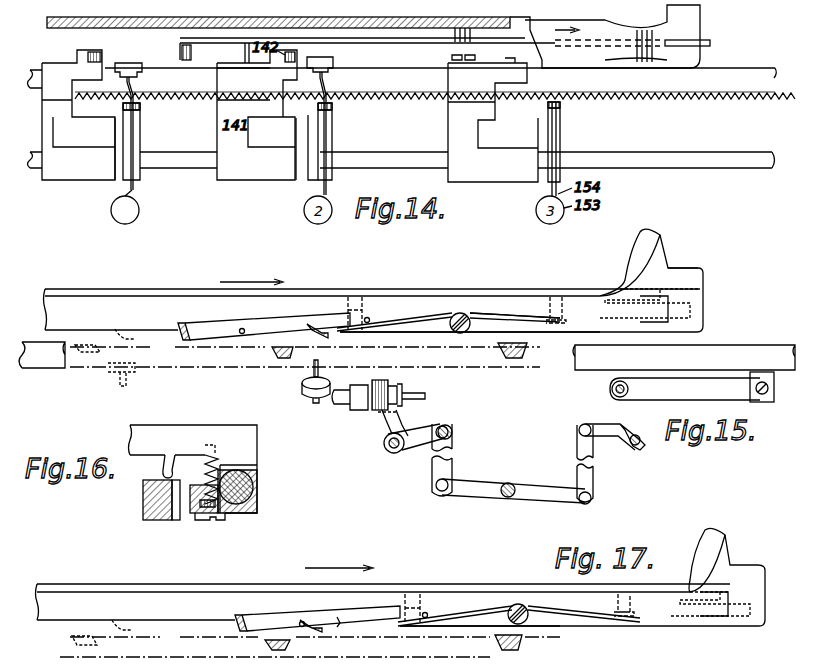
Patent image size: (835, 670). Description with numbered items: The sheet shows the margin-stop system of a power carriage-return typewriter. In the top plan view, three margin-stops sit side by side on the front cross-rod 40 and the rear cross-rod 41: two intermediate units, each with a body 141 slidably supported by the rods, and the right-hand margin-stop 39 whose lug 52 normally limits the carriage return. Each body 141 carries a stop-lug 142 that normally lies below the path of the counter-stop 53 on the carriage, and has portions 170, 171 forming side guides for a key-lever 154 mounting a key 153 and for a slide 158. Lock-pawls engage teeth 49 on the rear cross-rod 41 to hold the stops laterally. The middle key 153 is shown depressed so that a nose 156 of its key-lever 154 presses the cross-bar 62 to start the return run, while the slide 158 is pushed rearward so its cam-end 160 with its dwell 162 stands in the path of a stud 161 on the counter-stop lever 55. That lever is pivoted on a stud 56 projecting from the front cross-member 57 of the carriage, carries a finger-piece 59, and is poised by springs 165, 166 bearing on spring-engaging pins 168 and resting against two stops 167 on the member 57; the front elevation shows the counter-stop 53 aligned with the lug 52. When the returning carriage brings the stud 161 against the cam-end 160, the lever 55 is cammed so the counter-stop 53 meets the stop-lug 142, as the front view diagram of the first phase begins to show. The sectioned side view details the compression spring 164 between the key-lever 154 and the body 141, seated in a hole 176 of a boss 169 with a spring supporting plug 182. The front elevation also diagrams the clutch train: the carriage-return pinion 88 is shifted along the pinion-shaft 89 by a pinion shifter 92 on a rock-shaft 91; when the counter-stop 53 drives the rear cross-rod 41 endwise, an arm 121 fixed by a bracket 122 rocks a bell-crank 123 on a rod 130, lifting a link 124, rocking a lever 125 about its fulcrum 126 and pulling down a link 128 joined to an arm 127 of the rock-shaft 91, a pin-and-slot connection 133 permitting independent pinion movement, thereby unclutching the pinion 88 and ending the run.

In FIG. 14, the margin-stop 39 is at (493, 122).
In FIG. 14, the front cross-rod 40 is at (715, 152).
In FIG. 15, the front cross-rod 40 is at (42, 355).
In FIG. 16, the front cross-rod 40 is at (240, 486).
In FIG. 14, the rear cross-rod 41 is at (678, 92).
In FIG. 15, the rear cross-rod 41 is at (758, 330).
In FIG. 14, the teeth 49 is at (630, 93).
In FIG. 14, the lug 52 is at (510, 58).
In FIG. 15, the lug 52 is at (502, 350).
In FIG. 17, the lug 52 is at (500, 650).
In FIG. 14, the counter-stop 53 is at (180, 44).
In FIG. 15, the counter-stop 53 is at (178, 324).
In FIG. 17, the counter-stop 53 is at (235, 618).
In FIG. 14, the counter-stop lever 55 is at (406, 46).
In FIG. 15, the counter-stop lever 55 is at (429, 345).
In FIG. 17, the counter-stop lever 55 is at (585, 630).
In FIG. 14, the stud 56 is at (452, 50).
In FIG. 15, the stud 56 is at (476, 280).
In FIG. 17, the stud 56 is at (514, 602).
In FIG. 14, the front cross-member 57 is at (592, 25).
In FIG. 15, the front cross-member 57 is at (176, 293).
In FIG. 17, the front cross-member 57 is at (401, 577).
In FIG. 14, the finger-piece 59 is at (710, 40).
In FIG. 15, the finger-piece 59 is at (709, 268).
In FIG. 16, the cross-bar 62 is at (143, 500).
In FIG. 15, the carriage-return pinion 88 is at (380, 380).
In FIG. 15, the pinion-shaft 89 is at (426, 396).
In FIG. 15, the rock-shaft 91 is at (390, 452).
In FIG. 15, the pinion shifter 92 is at (388, 430).
In FIG. 15, the arm 121 is at (685, 389).
In FIG. 15, the bracket 122 is at (753, 372).
In FIG. 15, the bell-crank 123 is at (618, 420).
In FIG. 15, the link 124 is at (576, 450).
In FIG. 15, the lever 125 is at (556, 466).
In FIG. 15, the fulcrum 126 is at (520, 466).
In FIG. 15, the arm 127 is at (420, 450).
In FIG. 15, the link 128 is at (452, 462).
In FIG. 15, the rod 130 is at (632, 446).
In FIG. 15, the pin-and-slot connection 133 is at (630, 392).
In FIG. 14, the body 141 is at (78, 115).
In FIG. 14, the stop-lug 142 is at (77, 55).
In FIG. 15, the stop-lug 142 is at (276, 349).
In FIG. 17, the stop-lug 142 is at (268, 643).
In FIG. 14, the key 153 is at (111, 206).
In FIG. 15, the key 153 is at (302, 388).
In FIG. 14, the key-lever 154 is at (132, 192).
In FIG. 15, the key-lever 154 is at (319, 364).
In FIG. 16, the key-lever 154 is at (185, 438).
In FIG. 16, the nose 156 is at (169, 464).
In FIG. 14, the slide 158 is at (136, 88).
In FIG. 14, the cam-end 160 is at (132, 62).
In FIG. 15, the cam-end 160 is at (306, 325).
In FIG. 17, the cam-end 160 is at (306, 632).
In FIG. 14, the stud 161 is at (244, 50).
In FIG. 15, the stud 161 is at (239, 331).
In FIG. 17, the stud 161 is at (300, 622).
In FIG. 14, the dwell 162 is at (334, 62).
In FIG. 16, the compression spring 164 is at (222, 455).
In FIG. 15, the spring 165 is at (420, 310).
In FIG. 17, the spring 165 is at (519, 616).
In FIG. 15, the counter-stop-lever spring 166 is at (522, 312).
In FIG. 15, the stops 167 is at (360, 280).
In FIG. 15, the spring-engaging pins 168 is at (370, 316).
In FIG. 16, the boss 169 is at (192, 513).
In FIG. 14, the portion 170 is at (308, 125).
In FIG. 14, the portion 171 is at (333, 128).
In FIG. 16, the portion 171 is at (245, 466).
In FIG. 16, the hole 176 is at (245, 513).
In FIG. 16, the spring supporting plug 182 is at (218, 520).